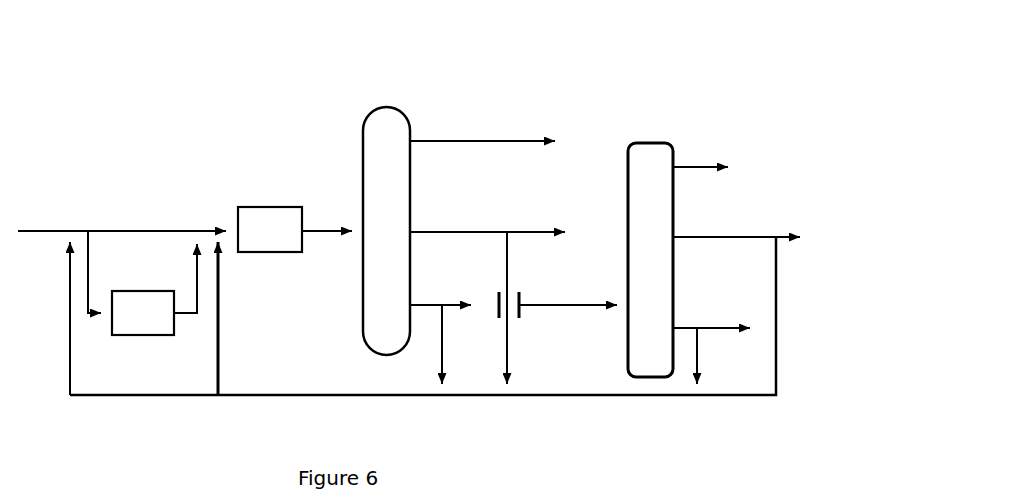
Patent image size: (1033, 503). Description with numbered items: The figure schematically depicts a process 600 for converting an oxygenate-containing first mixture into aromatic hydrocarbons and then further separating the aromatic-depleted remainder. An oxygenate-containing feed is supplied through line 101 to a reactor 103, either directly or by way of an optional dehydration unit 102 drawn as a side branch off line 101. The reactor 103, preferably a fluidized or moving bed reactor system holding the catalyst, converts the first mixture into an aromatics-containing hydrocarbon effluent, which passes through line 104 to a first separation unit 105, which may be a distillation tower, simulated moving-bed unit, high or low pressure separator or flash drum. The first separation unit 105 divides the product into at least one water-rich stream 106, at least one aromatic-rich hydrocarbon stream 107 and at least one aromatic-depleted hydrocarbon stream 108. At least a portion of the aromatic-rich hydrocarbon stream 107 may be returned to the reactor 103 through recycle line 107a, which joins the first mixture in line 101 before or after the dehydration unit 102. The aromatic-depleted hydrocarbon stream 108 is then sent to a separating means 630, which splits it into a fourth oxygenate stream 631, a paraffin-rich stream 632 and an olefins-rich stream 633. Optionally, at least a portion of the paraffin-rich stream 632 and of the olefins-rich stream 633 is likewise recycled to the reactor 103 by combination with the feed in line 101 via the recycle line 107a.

The process 600 is at (118, 48).
The line 101 is at (131, 228).
The dehydration unit 102 is at (159, 323).
The reactor 103 is at (286, 240).
The line 104 is at (337, 226).
The first separation unit 105 is at (403, 210).
The water-rich stream 106 is at (458, 140).
The aromatic-rich hydrocarbon stream 107 is at (457, 231).
The recycle line 107a is at (207, 398).
The aromatic-depleted hydrocarbon stream 108 is at (460, 302).
The separating means 630 is at (666, 260).
The fourth oxygenate stream 631 is at (698, 163).
The paraffin-rich stream 632 is at (698, 235).
The olefins-rich stream 633 is at (685, 325).